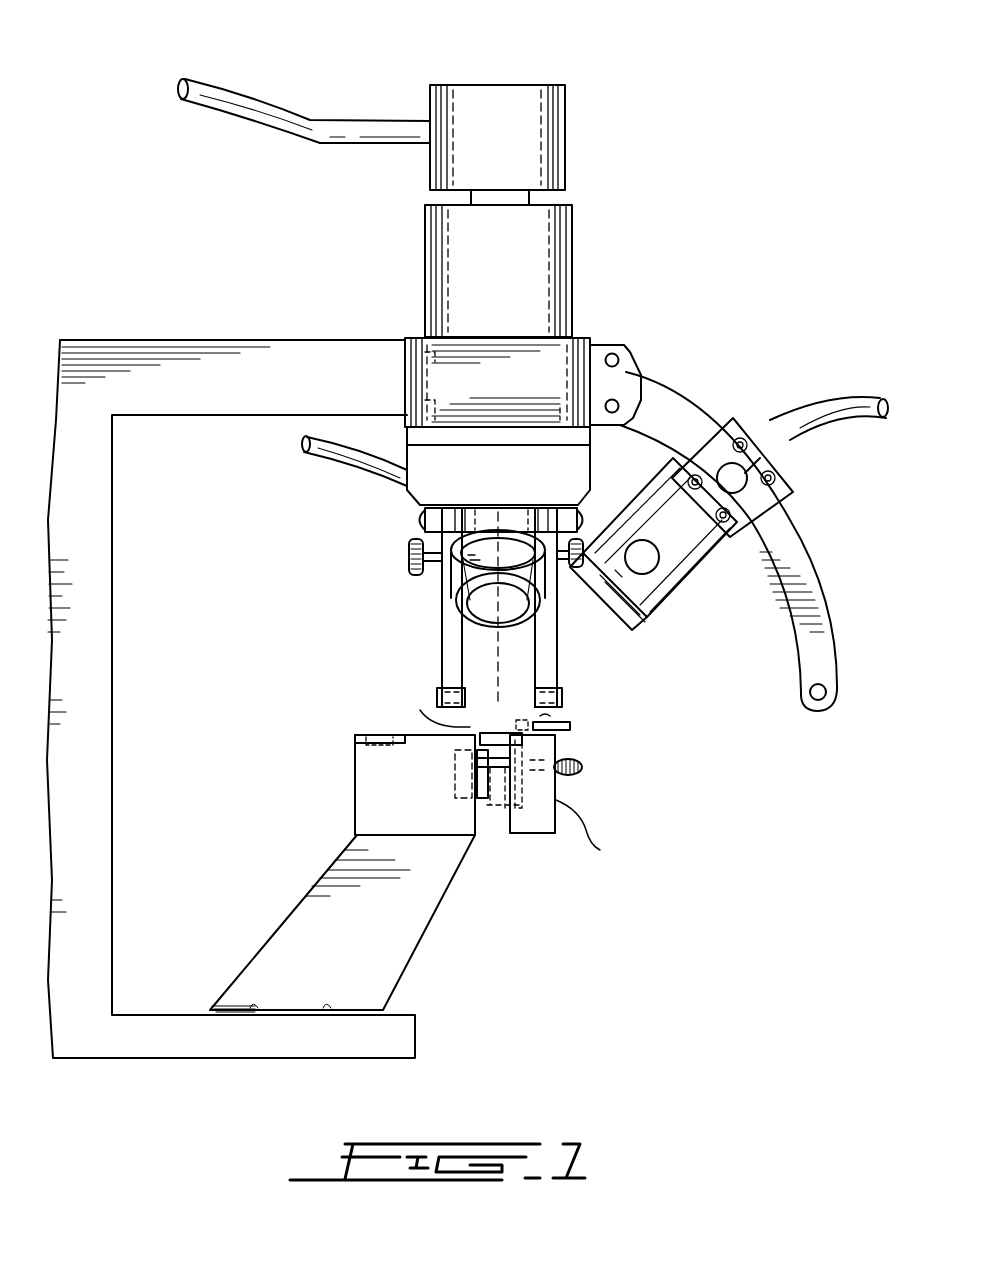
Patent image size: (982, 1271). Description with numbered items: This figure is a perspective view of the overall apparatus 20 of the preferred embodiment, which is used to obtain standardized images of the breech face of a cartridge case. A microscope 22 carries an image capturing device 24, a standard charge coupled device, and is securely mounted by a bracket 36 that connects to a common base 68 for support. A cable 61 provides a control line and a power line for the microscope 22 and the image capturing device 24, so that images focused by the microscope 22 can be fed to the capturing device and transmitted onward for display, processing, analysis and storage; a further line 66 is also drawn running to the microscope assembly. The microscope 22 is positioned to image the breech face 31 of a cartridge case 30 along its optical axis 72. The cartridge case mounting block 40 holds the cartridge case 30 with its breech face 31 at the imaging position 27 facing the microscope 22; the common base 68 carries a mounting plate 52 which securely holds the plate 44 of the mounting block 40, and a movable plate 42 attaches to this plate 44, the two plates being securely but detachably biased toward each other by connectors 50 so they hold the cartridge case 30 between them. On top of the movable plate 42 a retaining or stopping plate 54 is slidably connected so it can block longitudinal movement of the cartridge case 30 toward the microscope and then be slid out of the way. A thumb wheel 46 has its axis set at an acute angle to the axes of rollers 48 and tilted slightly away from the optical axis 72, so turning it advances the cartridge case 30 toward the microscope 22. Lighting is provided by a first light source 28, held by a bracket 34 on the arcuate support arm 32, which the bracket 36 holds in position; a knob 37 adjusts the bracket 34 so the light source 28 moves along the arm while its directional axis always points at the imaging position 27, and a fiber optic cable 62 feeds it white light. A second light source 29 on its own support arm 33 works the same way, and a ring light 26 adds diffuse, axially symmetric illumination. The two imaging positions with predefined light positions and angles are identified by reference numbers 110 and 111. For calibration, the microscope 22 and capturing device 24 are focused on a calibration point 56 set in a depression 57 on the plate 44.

The wire stripping apparatus 20 is at (775, 768).
The microscope 22 is at (572, 244).
The image capturing device 24 is at (565, 92).
The ring light 26 is at (590, 458).
The imaging position 27 is at (462, 700).
The first light source 28 is at (640, 605).
The second light source 29 is at (420, 500).
The cartridge case 30 is at (490, 810).
The breech face 31 is at (475, 735).
The support arm 32 is at (660, 375).
The support arm 33 is at (445, 578).
The bracket 34 is at (780, 420).
The bracket 36 is at (585, 335).
The knob 37 is at (745, 473).
The cartridge case mounting block 40 is at (415, 703).
The movable plate 42 is at (540, 790).
The plate 44 is at (385, 800).
The thumb wheel 46 is at (612, 760).
The rollers 48 is at (482, 840).
The connectors 50 is at (560, 815).
The mounting plate 52 is at (335, 890).
The retaining or stopping plate 54 is at (575, 722).
The calibration point 56 is at (370, 730).
The depression 57 is at (368, 737).
The cable 61 is at (333, 130).
The fiber optic cable 62 is at (862, 405).
The air hose 66 is at (315, 460).
The common base 68 is at (218, 340).
The optical axis 72 is at (500, 678).
The imaging position 110 is at (748, 318).
The imaging position 111 is at (370, 608).